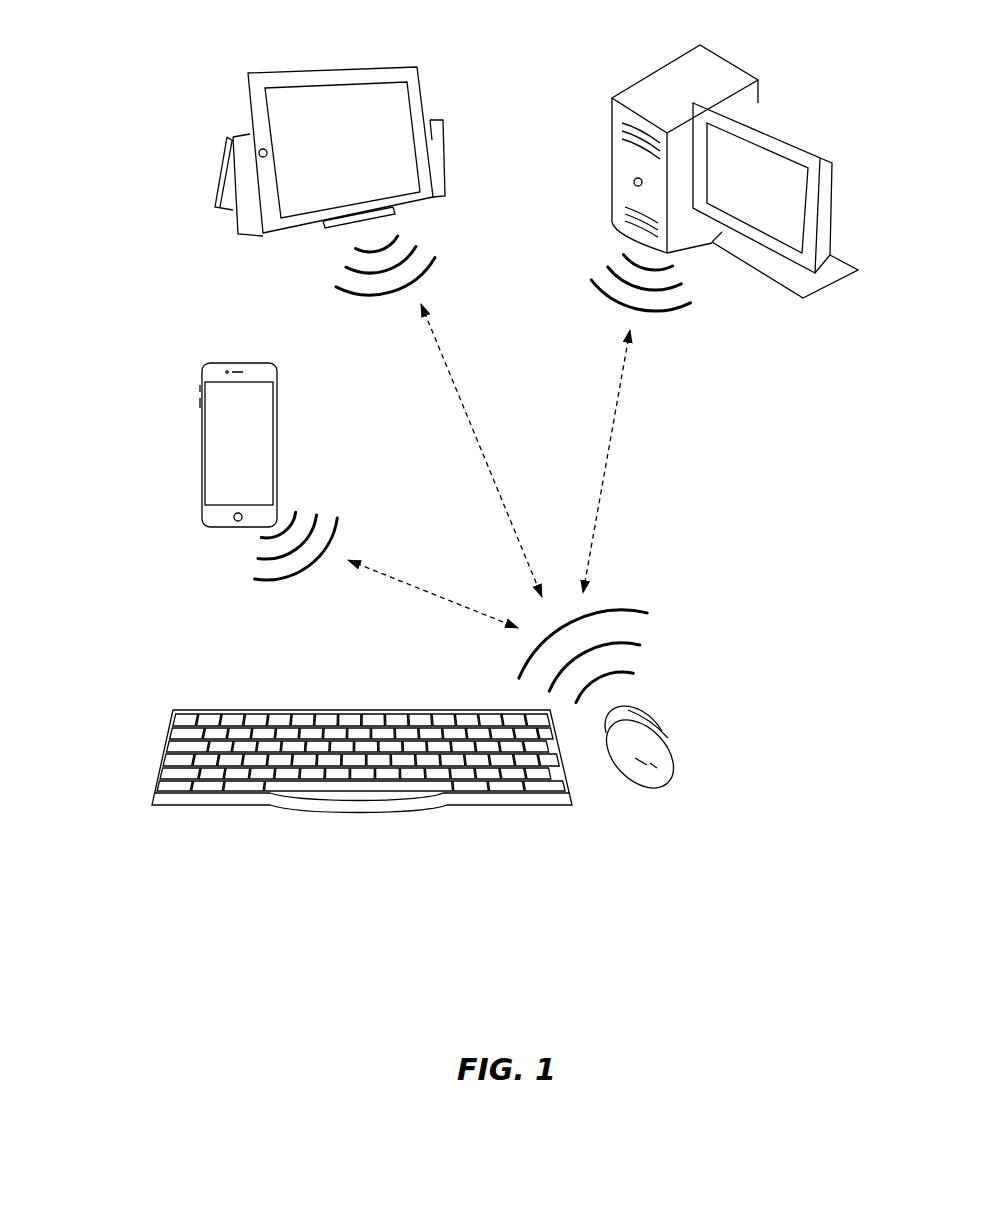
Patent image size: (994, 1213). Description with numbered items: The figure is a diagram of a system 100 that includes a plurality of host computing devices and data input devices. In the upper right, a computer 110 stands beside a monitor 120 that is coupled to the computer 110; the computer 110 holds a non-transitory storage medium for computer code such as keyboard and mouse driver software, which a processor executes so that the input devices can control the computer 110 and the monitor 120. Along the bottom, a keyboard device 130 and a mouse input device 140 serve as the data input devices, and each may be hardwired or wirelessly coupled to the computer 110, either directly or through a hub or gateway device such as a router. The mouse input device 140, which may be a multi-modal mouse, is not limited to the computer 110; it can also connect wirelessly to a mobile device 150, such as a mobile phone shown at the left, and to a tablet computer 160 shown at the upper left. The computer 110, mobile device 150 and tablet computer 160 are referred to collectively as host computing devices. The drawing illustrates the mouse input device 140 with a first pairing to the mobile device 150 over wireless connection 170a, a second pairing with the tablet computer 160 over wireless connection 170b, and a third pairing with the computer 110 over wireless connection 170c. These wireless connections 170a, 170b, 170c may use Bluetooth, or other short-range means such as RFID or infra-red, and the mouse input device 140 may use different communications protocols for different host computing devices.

The system 100 is at (153, 912).
The computer 110 is at (613, 135).
The monitor 120 is at (835, 183).
The keyboard device 130 is at (167, 730).
The mouse input device 140 is at (655, 723).
The mobile device 150 is at (277, 405).
The tablet computer 160 is at (308, 65).
The wireless connection 170a is at (433, 594).
The wireless connection 170b is at (481, 450).
The wireless connection 170c is at (588, 461).